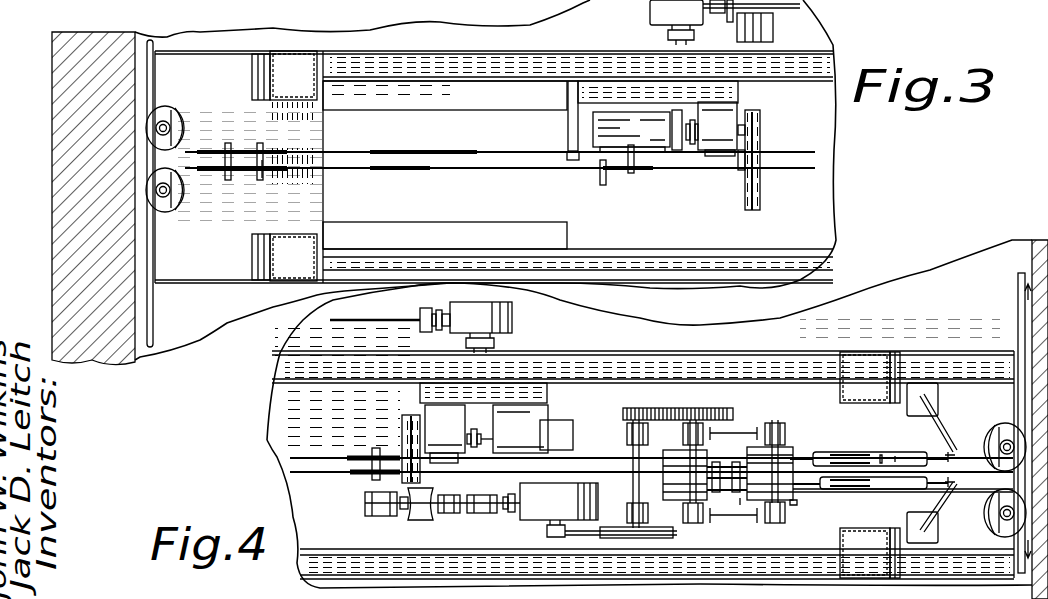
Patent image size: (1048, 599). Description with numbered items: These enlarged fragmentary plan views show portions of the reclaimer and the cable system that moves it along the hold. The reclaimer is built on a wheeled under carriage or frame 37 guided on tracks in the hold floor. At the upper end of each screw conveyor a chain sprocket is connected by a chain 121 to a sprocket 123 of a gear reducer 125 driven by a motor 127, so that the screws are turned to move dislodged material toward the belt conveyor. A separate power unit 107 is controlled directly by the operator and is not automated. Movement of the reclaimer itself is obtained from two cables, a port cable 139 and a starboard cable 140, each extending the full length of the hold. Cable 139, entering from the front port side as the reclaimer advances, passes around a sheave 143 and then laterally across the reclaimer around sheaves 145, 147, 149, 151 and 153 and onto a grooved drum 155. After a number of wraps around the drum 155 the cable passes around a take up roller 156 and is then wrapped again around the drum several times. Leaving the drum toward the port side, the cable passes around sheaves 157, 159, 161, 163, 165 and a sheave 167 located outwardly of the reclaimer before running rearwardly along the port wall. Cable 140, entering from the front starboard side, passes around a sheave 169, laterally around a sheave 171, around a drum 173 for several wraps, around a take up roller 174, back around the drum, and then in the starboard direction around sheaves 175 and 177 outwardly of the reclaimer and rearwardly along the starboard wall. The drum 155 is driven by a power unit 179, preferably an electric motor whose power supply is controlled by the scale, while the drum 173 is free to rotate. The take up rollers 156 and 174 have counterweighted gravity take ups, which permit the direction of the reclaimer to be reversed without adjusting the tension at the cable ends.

In FIG. 3, the frame 37 is at (284, 44).
In FIG. 4, the power unit 107 is at (505, 321).
In FIG. 3, the chain 121 is at (762, 190).
In FIG. 4, the chain 121 is at (424, 478).
In FIG. 3, the sprocket 123 is at (765, 125).
In FIG. 4, the sprocket 123 is at (408, 415).
In FIG. 3, the gear reducer 125 is at (730, 107).
In FIG. 4, the gear reducer 125 is at (445, 434).
In FIG. 3, the motor 127 is at (630, 120).
In FIG. 4, the motor 127 is at (520, 429).
In FIG. 3, the cable 139 is at (150, 45).
In FIG. 4, the cable 139 is at (290, 472).
In FIG. 4, the cable 140 is at (1018, 322).
In FIG. 3, the sheave 143 is at (172, 212).
In FIG. 3, the sheave 145 is at (280, 172).
In FIG. 3, the sheave 147 is at (203, 172).
In FIG. 3, the sheave 149 is at (612, 170).
In FIG. 4, the sheave 151 is at (361, 474).
In FIG. 4, the sheave 153 is at (785, 448).
In FIG. 4, the grooved drum 155 is at (632, 492).
In FIG. 4, the take up roller 156 is at (842, 458).
In FIG. 4, the sheave 157 is at (745, 447).
In FIG. 4, the sheave 159 is at (365, 453).
In FIG. 3, the sheave 161 is at (634, 150).
In FIG. 3, the sheave 163 is at (200, 150).
In FIG. 3, the sheave 165 is at (280, 151).
In FIG. 3, the sheave 167 is at (175, 112).
In FIG. 4, the sheave 169 is at (985, 521).
In FIG. 4, the sheave 171 is at (745, 497).
In FIG. 4, the drum 173 is at (797, 495).
In FIG. 4, the take up roller 174 is at (845, 489).
In FIG. 4, the sheave 175 is at (792, 500).
In FIG. 4, the sheave 177 is at (1005, 423).
In FIG. 4, the power unit 179 is at (598, 510).